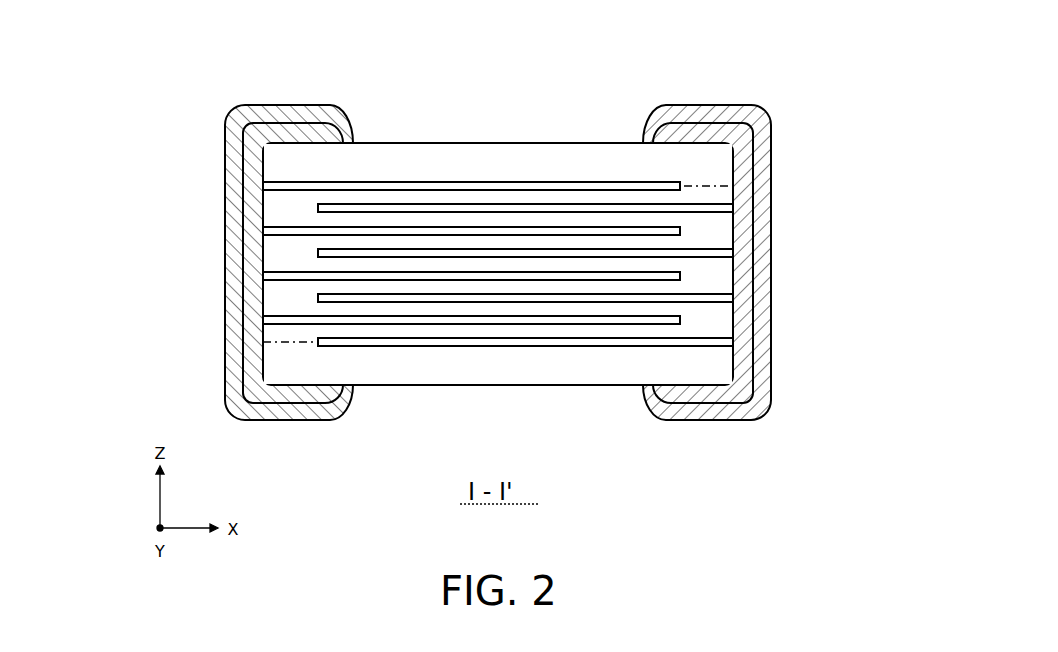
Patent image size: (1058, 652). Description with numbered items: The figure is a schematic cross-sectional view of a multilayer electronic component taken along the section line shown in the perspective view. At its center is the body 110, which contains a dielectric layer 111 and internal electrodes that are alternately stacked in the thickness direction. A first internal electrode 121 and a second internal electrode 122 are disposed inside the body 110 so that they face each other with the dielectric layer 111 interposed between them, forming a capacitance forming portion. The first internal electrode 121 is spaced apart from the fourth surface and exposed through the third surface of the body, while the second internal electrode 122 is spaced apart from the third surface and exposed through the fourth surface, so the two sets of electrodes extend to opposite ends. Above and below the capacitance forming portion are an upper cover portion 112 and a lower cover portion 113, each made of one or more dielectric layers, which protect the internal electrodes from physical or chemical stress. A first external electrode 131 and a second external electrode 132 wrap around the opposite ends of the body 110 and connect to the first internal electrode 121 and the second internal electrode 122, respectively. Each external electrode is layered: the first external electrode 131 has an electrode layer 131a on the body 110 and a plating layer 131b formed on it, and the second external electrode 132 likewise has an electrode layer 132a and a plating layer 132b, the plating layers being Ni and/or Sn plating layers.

The body 110 is at (432, 144).
The dielectric layer 111 is at (383, 220).
The upper cover portion 112 is at (500, 148).
The lower cover portion 113 is at (500, 372).
The first internal electrode 121 is at (570, 183).
The second internal electrode 122 is at (627, 205).
The first external electrode 131 is at (217, 262).
The electrode layer 131a is at (233, 193).
The plating layer 131b is at (237, 221).
The second external electrode 132 is at (778, 262).
The electrode layer 132a is at (744, 172).
The plating layer 132b is at (772, 196).